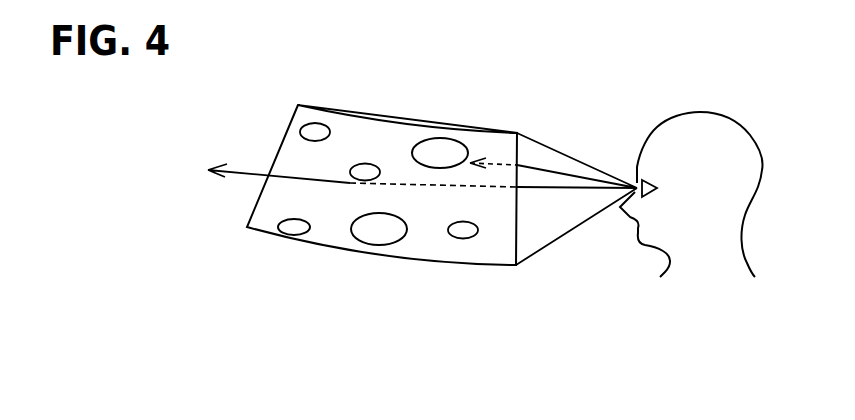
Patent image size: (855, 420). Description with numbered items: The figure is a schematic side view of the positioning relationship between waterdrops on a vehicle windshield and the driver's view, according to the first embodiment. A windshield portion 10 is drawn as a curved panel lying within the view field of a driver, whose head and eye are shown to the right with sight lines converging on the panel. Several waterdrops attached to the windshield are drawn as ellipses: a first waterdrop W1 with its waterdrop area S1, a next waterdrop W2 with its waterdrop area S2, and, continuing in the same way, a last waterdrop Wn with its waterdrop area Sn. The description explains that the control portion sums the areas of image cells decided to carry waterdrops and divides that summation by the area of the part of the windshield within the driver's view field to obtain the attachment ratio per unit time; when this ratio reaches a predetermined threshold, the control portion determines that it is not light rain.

The display panel 10 is at (495, 143).
The waterdrop W1 is at (411, 150).
The next waterdrop W2 is at (379, 258).
The last waterdrop Wn is at (293, 241).
The waterdrop area S1 is at (440, 153).
The waterdrop area S2 is at (379, 229).
The waterdrop area Sn is at (294, 213).